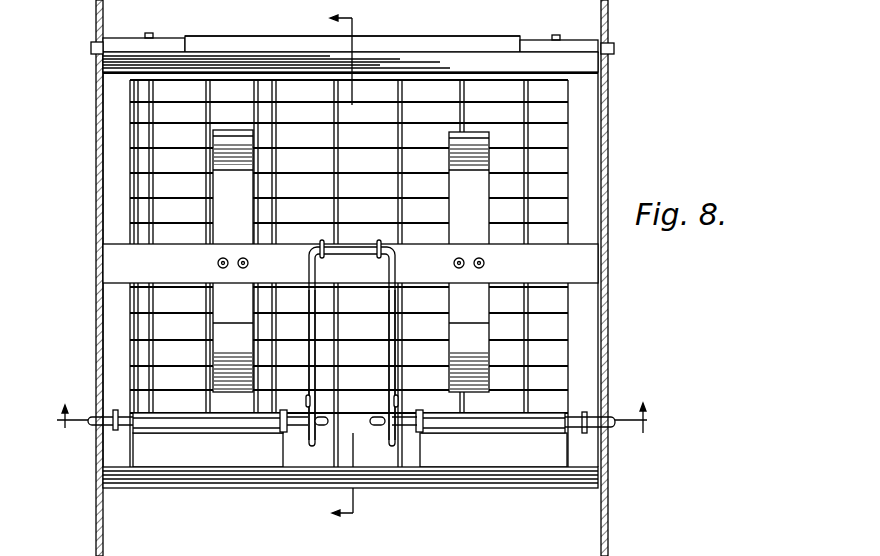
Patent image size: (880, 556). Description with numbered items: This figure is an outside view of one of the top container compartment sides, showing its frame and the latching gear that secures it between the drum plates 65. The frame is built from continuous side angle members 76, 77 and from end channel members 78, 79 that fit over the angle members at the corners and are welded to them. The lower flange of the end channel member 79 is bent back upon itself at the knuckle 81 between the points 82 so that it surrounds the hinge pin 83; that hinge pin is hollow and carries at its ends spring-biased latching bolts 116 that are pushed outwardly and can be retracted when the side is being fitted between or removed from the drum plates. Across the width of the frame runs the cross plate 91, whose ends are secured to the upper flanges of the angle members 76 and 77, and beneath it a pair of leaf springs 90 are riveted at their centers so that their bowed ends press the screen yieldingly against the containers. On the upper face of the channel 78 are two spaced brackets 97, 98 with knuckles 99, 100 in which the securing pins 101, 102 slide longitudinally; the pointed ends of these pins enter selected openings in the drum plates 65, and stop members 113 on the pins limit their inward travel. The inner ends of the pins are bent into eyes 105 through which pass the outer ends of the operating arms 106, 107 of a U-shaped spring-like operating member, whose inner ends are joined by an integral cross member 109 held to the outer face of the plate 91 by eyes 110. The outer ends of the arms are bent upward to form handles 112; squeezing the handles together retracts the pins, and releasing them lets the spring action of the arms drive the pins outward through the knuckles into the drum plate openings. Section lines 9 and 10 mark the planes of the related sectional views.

The section line 9- 9 is at (353, 419).
The section line 10- 10 is at (348, 268).
The drum plate 65 is at (610, 112).
The side angle member 76 is at (116, 347).
The side angle member 77 is at (582, 342).
The end channel member 78 is at (287, 475).
The end channel member 79 is at (428, 60).
The knuckle 81 is at (394, 38).
The points 82 is at (183, 36).
The hinge pin 83 is at (172, 22).
The leaf spring 90 is at (351, 261).
The cross plate 91 is at (550, 259).
The bracket 97 is at (235, 448).
The bracket 98 is at (488, 453).
The knuckle 99 is at (185, 420).
The knuckle 100 is at (535, 430).
The securing pin 101 is at (130, 427).
The securing pin 102 is at (602, 412).
The eye 105 is at (325, 425).
The operating arm 106 is at (312, 345).
The operating arm 107 is at (390, 328).
The cross member 109 is at (353, 247).
The eye 110 is at (381, 240).
The handle 112 is at (385, 400).
The stop member 113 is at (116, 410).
The latching bolt 116 is at (91, 47).